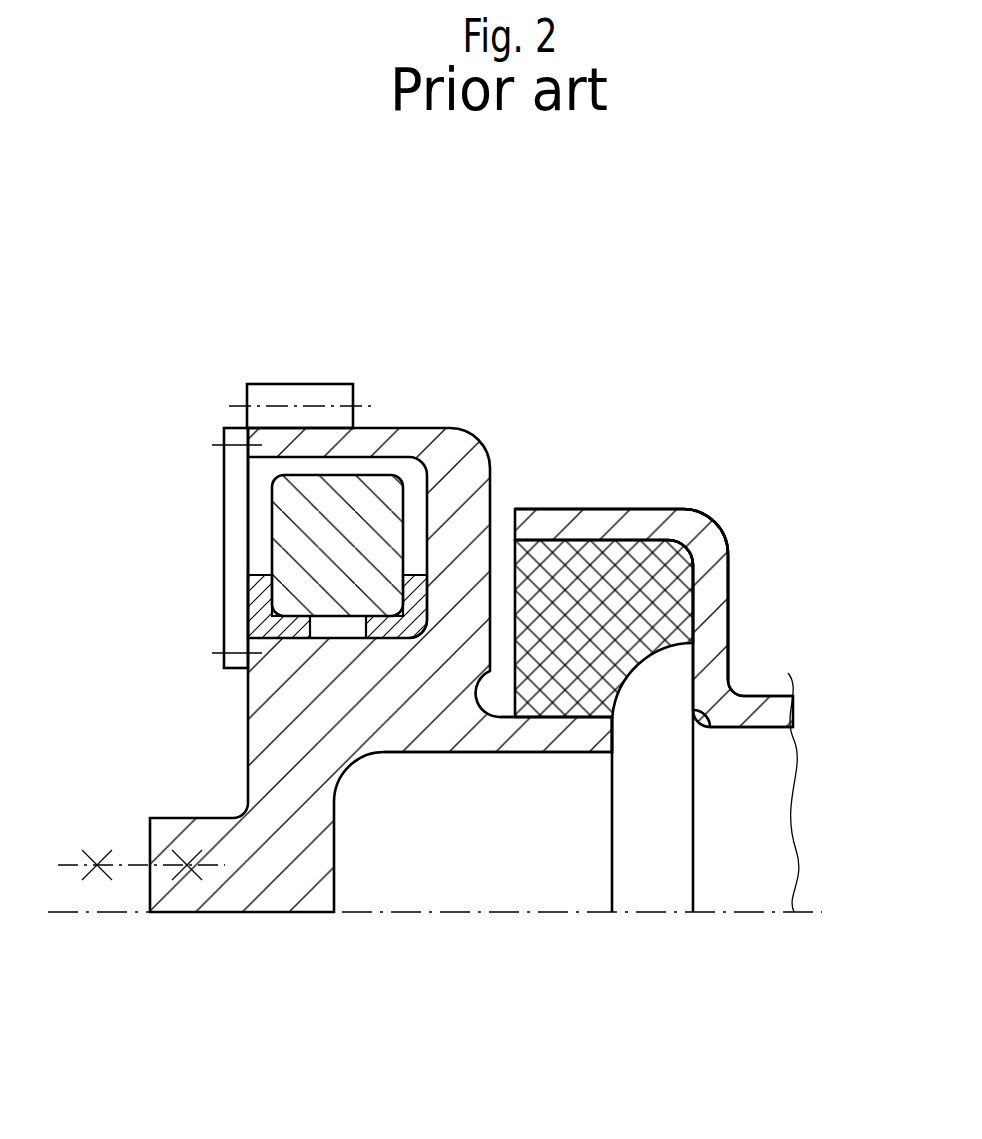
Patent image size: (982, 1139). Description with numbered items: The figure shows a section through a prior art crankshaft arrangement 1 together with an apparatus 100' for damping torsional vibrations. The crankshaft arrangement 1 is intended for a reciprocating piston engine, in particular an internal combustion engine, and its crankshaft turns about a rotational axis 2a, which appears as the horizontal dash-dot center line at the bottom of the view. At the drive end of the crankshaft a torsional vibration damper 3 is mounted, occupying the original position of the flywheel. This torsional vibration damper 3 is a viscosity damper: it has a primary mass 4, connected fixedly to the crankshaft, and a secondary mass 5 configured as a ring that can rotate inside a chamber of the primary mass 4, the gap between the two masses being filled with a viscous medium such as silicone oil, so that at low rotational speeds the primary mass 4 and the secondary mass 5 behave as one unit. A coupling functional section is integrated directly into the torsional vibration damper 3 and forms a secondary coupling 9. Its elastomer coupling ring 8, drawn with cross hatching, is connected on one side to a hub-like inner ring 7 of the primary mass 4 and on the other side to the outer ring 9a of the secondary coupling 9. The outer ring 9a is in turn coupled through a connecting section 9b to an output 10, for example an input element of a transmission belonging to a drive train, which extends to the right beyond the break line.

The crankshaft arrangement 1 is at (150, 1000).
The rotational axis 2a is at (465, 913).
The torsional vibration damper 3 is at (236, 706).
The primary mass 4 is at (264, 738).
The secondary mass 5 is at (367, 505).
The inner ring 7 is at (580, 733).
The elastomer coupling ring 8 is at (595, 572).
The secondary coupling 9 is at (720, 496).
The outer ring 9a is at (657, 527).
The connecting section 9b is at (717, 587).
The output 10 is at (750, 708).
The apparatus 100' is at (621, 469).